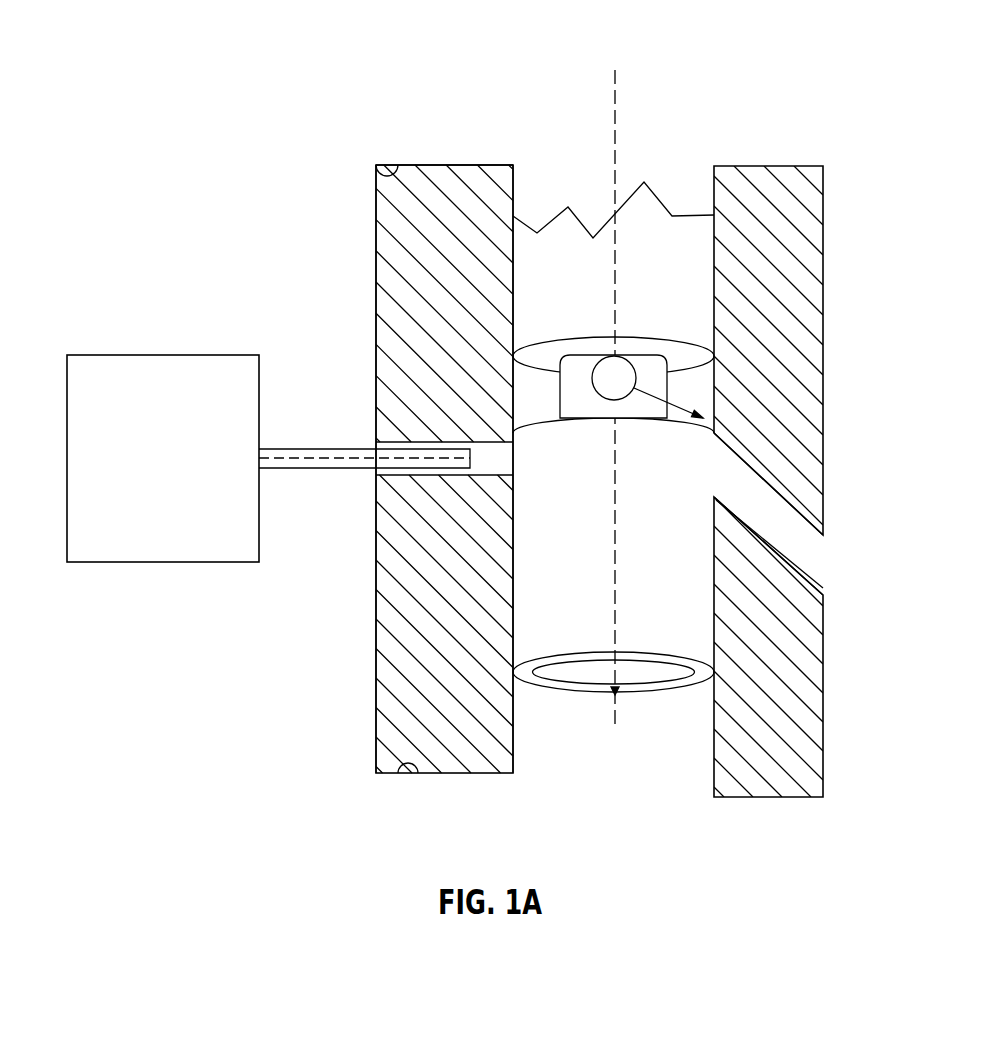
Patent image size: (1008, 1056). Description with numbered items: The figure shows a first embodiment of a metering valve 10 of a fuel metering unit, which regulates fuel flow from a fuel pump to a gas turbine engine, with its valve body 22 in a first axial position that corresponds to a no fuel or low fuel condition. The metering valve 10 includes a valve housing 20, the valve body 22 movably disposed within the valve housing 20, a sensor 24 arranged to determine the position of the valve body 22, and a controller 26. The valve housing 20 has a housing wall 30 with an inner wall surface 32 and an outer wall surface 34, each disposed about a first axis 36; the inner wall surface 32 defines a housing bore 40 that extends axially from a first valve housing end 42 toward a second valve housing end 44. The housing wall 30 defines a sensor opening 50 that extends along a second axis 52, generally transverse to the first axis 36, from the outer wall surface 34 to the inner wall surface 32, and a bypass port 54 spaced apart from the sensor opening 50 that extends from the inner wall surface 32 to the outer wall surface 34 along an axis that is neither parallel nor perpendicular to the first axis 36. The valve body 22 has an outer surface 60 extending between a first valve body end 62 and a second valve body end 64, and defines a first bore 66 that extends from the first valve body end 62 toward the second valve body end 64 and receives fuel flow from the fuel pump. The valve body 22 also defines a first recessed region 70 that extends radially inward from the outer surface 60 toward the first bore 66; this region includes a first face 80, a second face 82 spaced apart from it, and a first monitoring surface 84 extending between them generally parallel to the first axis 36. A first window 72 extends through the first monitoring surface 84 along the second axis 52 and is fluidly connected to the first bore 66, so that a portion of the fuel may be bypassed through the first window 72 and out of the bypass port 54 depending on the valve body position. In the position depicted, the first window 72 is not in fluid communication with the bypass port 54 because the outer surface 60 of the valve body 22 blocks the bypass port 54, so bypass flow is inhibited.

The metering valve 10 is at (107, 38).
The valve housing 20 is at (452, 163).
The valve body 22 is at (645, 172).
The sensor 24 is at (486, 457).
The controller 26 is at (160, 564).
The housing wall 30 is at (472, 750).
The inner wall surface 32 is at (513, 760).
The outer wall surface 34 is at (375, 743).
The first axis 36 is at (612, 92).
The housing bore 40 is at (516, 182).
The first valve housing end 42 is at (385, 175).
The second valve housing end 44 is at (410, 778).
The sensor opening 50 is at (372, 448).
The second axis 52 is at (333, 462).
The bypass port 54 is at (782, 492).
The outer surface 60 is at (690, 637).
The first valve body end 62 is at (666, 228).
The second valve body end 64 is at (703, 672).
The first bore 66 is at (580, 672).
The first recessed region 70 is at (698, 390).
The first window 72 is at (612, 398).
The first face 80 is at (668, 352).
The second face 82 is at (519, 428).
The first monitoring surface 84 is at (583, 370).